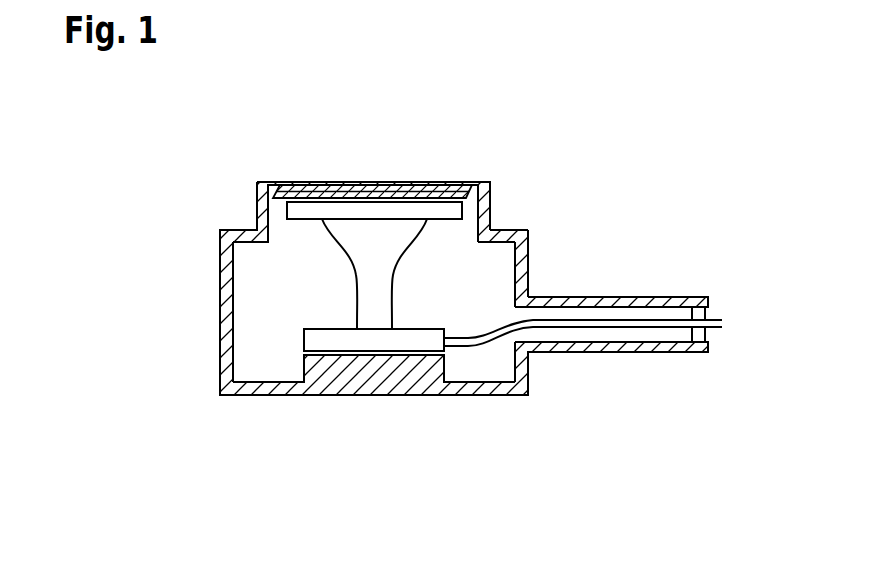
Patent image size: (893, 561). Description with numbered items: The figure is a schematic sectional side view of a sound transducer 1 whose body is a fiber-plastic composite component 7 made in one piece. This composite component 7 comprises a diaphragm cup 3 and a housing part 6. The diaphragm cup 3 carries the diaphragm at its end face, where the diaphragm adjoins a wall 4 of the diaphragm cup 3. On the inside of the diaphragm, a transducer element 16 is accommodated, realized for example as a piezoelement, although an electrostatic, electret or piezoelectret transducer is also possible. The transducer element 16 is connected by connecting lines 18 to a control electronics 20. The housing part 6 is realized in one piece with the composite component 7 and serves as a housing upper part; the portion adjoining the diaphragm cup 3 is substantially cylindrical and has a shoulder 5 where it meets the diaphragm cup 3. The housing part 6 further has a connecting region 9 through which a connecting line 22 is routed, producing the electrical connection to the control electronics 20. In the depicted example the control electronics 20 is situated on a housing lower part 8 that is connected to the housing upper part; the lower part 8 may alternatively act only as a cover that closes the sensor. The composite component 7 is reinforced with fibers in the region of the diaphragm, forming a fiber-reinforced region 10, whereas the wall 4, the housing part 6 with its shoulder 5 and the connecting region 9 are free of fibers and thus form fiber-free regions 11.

The sound transducer 1 is at (588, 165).
The diaphragm cup 3 is at (512, 166).
The wall 4 is at (487, 203).
The shoulder 5 is at (515, 231).
The housing part 6 is at (524, 267).
The fiber-plastic composite component 7 is at (584, 231).
The housing lower part 8 is at (475, 388).
The connecting region 9 is at (690, 297).
The fiber-reinforced region 10 is at (330, 186).
The fiber-free regions 11 is at (258, 212).
The transducer element 16 is at (389, 208).
The connecting lines 18 is at (392, 305).
The control electronics 20 is at (326, 343).
The connecting line 22 is at (722, 328).